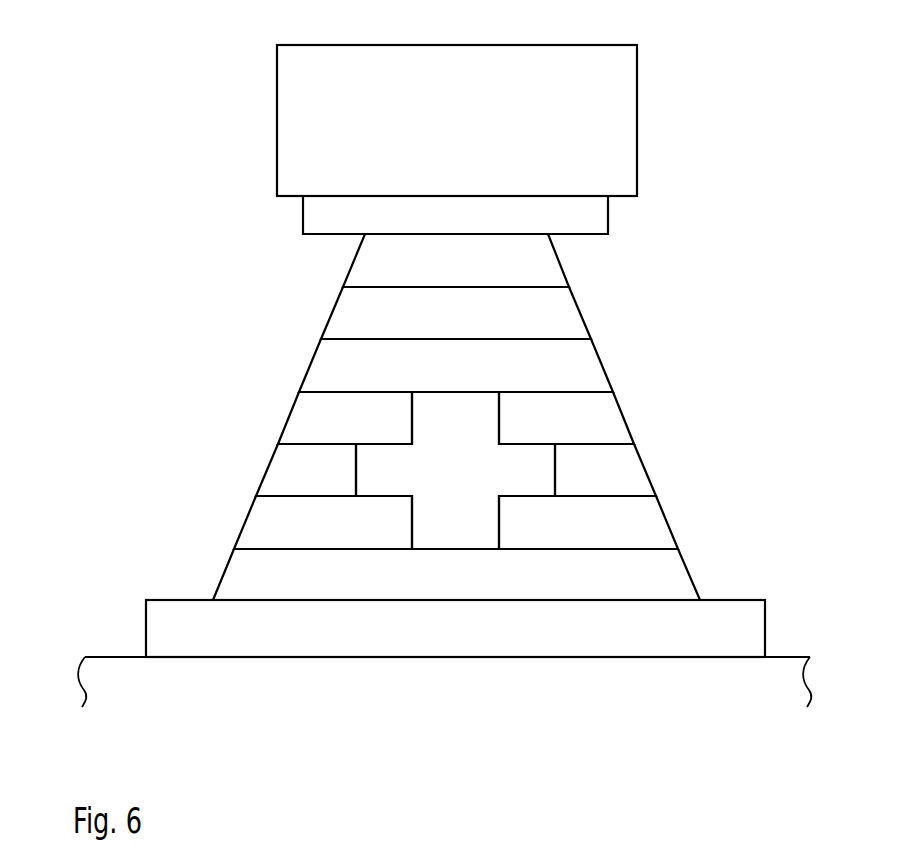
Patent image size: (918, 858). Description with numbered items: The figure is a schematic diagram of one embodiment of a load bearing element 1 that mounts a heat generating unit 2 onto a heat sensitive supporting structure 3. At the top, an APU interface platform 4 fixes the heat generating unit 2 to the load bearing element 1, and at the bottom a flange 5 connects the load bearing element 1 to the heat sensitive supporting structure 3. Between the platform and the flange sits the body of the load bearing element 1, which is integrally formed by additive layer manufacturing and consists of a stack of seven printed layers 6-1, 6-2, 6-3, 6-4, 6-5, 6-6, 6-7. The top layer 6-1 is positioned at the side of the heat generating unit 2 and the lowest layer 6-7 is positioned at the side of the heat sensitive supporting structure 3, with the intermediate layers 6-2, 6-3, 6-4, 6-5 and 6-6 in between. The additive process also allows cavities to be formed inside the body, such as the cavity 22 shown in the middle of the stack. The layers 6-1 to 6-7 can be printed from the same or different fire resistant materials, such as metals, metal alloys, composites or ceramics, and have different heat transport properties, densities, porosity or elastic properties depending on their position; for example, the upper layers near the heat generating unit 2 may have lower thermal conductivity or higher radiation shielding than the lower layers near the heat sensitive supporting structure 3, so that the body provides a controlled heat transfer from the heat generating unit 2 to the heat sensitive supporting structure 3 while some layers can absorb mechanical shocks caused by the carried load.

The load bearing element 1 is at (735, 104).
The heat generating unit 2 is at (448, 128).
The heat sensitive supporting structure 3 is at (448, 699).
The APU interface platform 4 is at (448, 227).
The flange 5 is at (448, 643).
The top layer 6-1 is at (442, 273).
The layer 6-2 is at (442, 328).
The layer 6-3 is at (442, 378).
The layer 6-4 is at (328, 431).
The layer 6-5 is at (298, 481).
The layer 6-6 is at (314, 536).
The lowest layer 6-7 is at (442, 590).
The cavity 22 is at (443, 481).